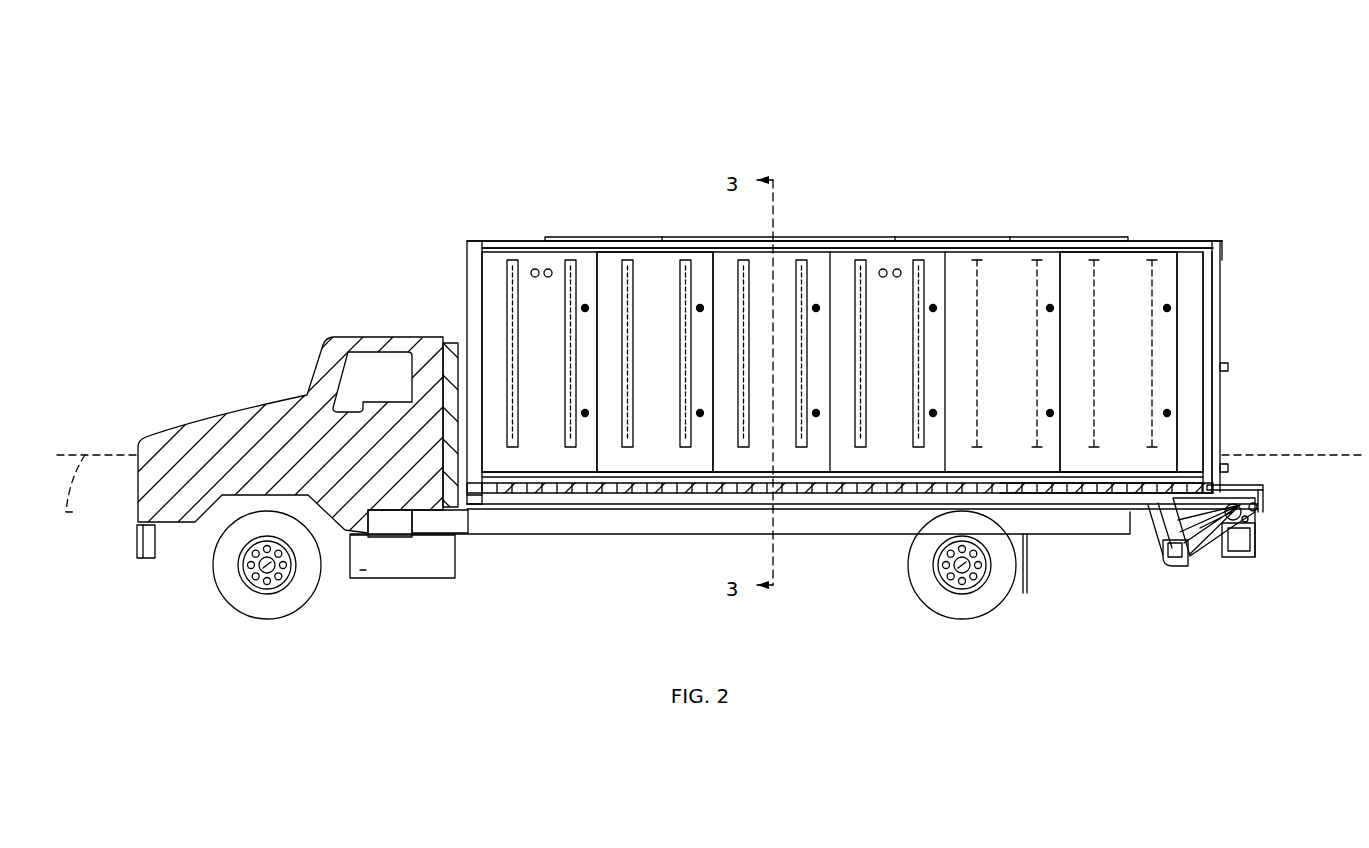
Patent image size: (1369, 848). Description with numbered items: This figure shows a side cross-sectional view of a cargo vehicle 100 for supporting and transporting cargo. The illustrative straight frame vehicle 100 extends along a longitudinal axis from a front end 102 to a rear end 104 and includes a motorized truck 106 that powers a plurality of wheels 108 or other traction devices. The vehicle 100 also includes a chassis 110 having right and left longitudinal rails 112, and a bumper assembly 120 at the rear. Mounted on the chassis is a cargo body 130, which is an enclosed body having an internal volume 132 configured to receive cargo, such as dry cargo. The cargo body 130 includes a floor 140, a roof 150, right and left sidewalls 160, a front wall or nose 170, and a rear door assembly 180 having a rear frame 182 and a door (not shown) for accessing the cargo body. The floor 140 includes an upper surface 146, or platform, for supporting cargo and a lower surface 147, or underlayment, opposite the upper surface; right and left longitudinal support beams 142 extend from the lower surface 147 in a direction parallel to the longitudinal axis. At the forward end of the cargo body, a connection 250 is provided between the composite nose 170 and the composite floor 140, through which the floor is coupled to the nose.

The cargo vehicle 100 is at (962, 98).
The front end 102 is at (126, 420).
The rear end 104 is at (1244, 348).
The motorized truck 106 is at (238, 422).
The wheels 108 is at (311, 596).
The chassis 110 is at (566, 538).
The longitudinal rails 112 is at (660, 522).
The bumper assembly 120 is at (1245, 470).
The cargo body 130 is at (914, 223).
The internal volume 132 is at (610, 274).
The floor 140 is at (845, 502).
The longitudinal support beams 142 is at (813, 500).
The upper surface 146 is at (1058, 492).
The lower surface 147 is at (1083, 495).
The roof 150 is at (1088, 230).
The sidewalls 160 is at (1137, 272).
The front wall 170 is at (462, 274).
The rear door assembly 180 is at (1230, 257).
The rear frame 182 is at (1222, 412).
The connection 250 is at (473, 503).